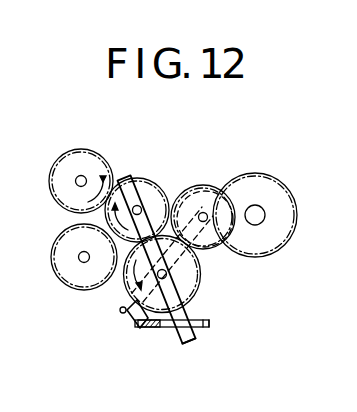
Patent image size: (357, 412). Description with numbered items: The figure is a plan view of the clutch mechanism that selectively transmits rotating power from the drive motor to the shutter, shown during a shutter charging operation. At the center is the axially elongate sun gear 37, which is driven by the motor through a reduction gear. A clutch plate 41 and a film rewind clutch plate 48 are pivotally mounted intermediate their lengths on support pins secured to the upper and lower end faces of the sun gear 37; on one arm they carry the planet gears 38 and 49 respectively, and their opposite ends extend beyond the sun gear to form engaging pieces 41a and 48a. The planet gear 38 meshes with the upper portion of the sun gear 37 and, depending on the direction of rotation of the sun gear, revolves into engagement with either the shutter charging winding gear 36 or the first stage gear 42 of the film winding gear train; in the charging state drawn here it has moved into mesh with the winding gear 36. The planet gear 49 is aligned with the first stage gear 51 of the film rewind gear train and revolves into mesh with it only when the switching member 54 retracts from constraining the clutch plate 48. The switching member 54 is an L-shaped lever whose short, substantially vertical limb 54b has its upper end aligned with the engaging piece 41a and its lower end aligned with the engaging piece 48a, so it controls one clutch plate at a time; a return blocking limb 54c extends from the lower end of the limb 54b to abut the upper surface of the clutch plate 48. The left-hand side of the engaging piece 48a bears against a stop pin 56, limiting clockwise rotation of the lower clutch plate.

The shutter charging winding gear 36 is at (63, 157).
The first stage gear of film rewind gear train 51 is at (53, 262).
The first stage gear of film winding gear train 42 is at (280, 179).
The planet gear 38 is at (149, 182).
The planet gear 49 is at (221, 192).
The sun gear 37 is at (128, 292).
The film rewind clutch plate 48 is at (205, 269).
The clutch plate 41 is at (131, 188).
The engaging piece 41a is at (192, 341).
The switching member 54 is at (173, 330).
The limb of reduced length 54b is at (148, 328).
The return blocking limb 54c is at (210, 325).
The engaging piece 48a is at (128, 326).
The stop pin 56 is at (120, 311).